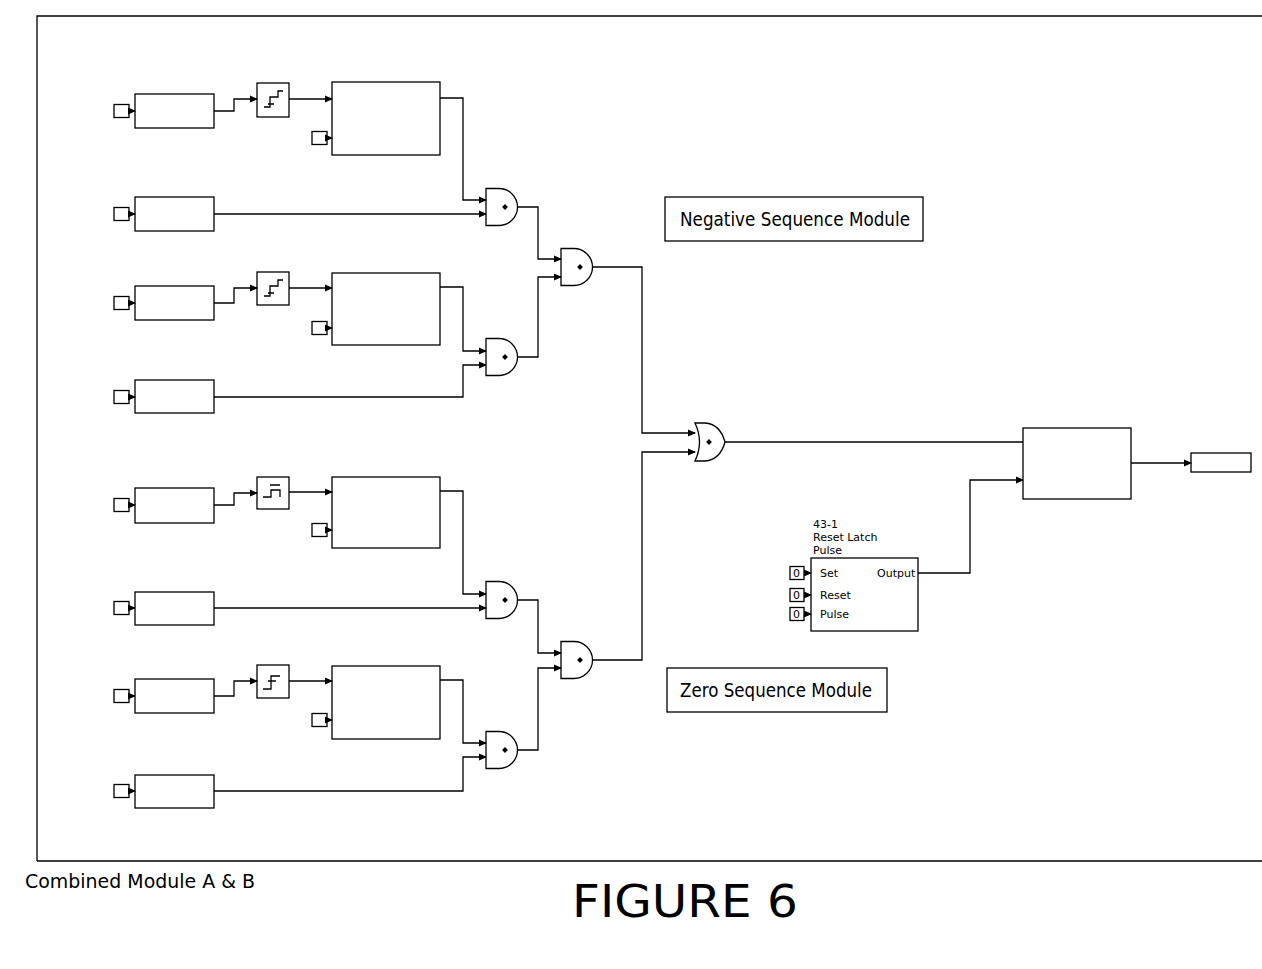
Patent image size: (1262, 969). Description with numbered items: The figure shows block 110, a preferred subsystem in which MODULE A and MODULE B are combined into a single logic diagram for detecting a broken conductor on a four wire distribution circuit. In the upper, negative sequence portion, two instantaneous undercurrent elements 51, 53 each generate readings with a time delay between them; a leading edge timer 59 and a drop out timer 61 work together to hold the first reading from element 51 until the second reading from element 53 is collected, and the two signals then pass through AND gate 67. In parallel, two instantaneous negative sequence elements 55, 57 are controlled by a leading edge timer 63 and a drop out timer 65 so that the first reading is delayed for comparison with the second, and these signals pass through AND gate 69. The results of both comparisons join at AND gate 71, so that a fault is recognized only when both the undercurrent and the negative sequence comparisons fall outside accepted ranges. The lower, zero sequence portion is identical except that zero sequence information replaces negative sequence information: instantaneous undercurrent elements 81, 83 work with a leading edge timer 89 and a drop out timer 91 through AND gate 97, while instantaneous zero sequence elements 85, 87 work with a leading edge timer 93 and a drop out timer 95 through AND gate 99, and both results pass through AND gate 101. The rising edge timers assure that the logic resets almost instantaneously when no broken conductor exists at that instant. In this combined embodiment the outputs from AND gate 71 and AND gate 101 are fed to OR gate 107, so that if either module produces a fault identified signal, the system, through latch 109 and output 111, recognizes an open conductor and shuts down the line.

The instantaneous undercurrent element 51 is at (142, 126).
The instantaneous undercurrent element 53 is at (142, 229).
The instantaneous negative sequence element 55 is at (142, 318).
The instantaneous negative sequence element 57 is at (142, 412).
The leading edge timer 59 is at (283, 83).
The drop out timer 61 is at (432, 82).
The leading edge timer 63 is at (291, 272).
The drop out timer 65 is at (432, 273).
The AND gate 67 is at (503, 188).
The AND gate 69 is at (495, 376).
The AND gate 71 is at (575, 249).
The instantaneous undercurrent element 81 is at (142, 521).
The instantaneous undercurrent element 83 is at (142, 623).
The instantaneous zero sequence element 85 is at (142, 711).
The instantaneous zero sequence element 87 is at (142, 806).
The leading edge timer 89 is at (289, 477).
The drop out timer 91 is at (432, 477).
The leading edge timer 93 is at (291, 665).
The drop out timer 95 is at (432, 666).
The AND gate 97 is at (503, 582).
The AND gate 99 is at (495, 769).
The AND gate 101 is at (575, 642).
The OR gate 107 is at (705, 423).
The latch 109 is at (1127, 428).
The block 110 is at (937, 861).
The output 111 is at (1215, 473).